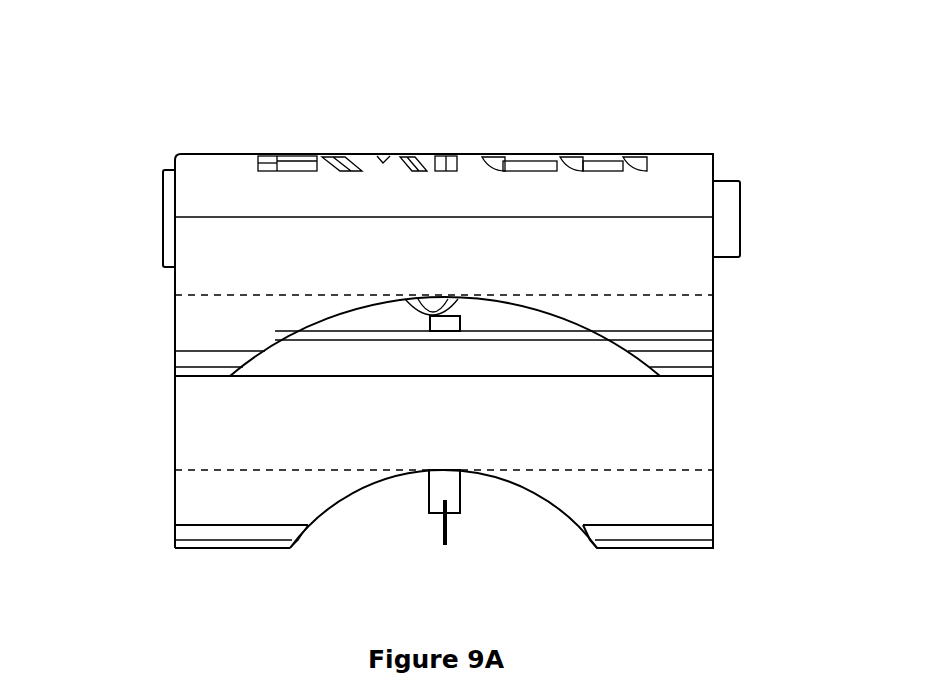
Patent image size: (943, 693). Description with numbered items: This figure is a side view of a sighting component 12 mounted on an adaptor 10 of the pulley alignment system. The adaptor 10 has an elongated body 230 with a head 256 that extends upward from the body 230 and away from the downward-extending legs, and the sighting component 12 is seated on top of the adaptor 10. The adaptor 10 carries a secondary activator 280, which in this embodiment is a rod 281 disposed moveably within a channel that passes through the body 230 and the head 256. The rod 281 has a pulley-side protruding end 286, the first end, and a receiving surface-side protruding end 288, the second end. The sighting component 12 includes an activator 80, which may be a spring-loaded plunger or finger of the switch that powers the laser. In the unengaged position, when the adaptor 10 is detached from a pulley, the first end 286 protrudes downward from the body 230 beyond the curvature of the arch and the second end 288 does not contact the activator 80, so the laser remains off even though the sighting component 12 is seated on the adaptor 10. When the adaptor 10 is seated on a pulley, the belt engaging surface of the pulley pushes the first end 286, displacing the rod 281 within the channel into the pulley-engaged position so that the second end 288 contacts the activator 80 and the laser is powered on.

The sighting component 12 is at (705, 150).
The adaptor 10 is at (715, 437).
The activator 80 is at (430, 298).
The elongated body 230 is at (642, 413).
The head 256 is at (328, 365).
The secondary activator 280 is at (452, 319).
The rod 281 is at (440, 488).
The pulley-side protruding end 286 is at (447, 543).
The receiving surface-side protruding end 288 is at (430, 320).